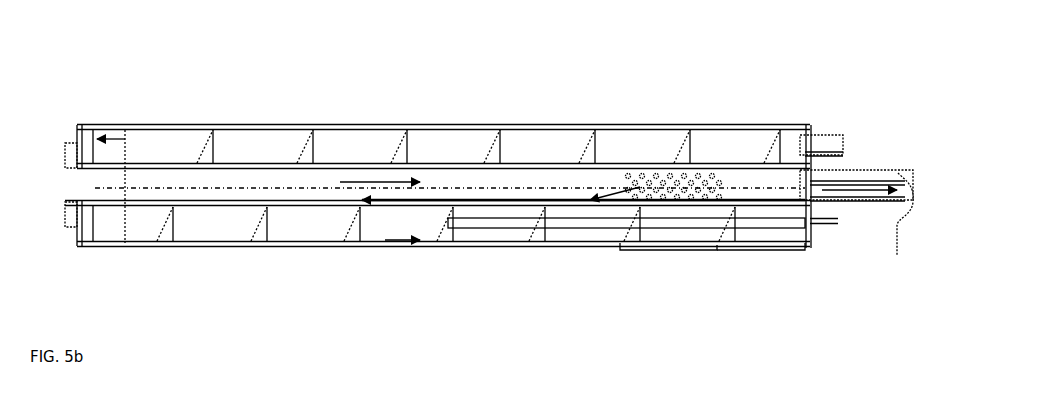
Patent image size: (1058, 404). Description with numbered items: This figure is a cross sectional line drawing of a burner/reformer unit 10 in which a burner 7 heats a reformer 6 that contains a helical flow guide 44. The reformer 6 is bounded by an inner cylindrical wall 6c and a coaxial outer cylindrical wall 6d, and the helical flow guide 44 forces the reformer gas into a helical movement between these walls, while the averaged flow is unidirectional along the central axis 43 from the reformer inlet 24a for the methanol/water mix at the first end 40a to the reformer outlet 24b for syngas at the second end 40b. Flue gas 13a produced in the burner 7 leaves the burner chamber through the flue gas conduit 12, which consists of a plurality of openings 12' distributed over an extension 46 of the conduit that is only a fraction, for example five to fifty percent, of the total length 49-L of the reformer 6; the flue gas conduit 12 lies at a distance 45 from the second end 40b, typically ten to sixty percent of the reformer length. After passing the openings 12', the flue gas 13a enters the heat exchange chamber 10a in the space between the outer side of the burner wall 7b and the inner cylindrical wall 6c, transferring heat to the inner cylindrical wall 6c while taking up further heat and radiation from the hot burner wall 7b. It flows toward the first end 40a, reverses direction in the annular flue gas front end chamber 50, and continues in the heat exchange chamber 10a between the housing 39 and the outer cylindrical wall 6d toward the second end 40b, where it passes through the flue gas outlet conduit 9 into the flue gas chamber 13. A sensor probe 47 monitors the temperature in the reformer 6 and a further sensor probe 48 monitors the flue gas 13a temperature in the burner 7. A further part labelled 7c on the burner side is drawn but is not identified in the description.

The burner/reformer unit 10 is at (125, 73).
The reformer inlet 24a is at (65, 150).
The first end of reformer 40a is at (128, 132).
The reformer 6 is at (247, 135).
The helical flow guide 44 is at (313, 165).
The flue gas 13a is at (373, 183).
The housing 39 is at (447, 123).
The heat exchange chamber 10a is at (480, 125).
The outer cylindrical wall 6d is at (513, 123).
The openings 12' is at (669, 125).
The second end of reformer 40b is at (803, 157).
The reformer outlet 24b is at (825, 135).
The flue gas outlet conduit 9 is at (810, 177).
The flue gas chamber 13 is at (897, 173).
The return channel 7c is at (805, 193).
The flue gas front end chamber 50 is at (88, 240).
The central axis of reformer 43 is at (130, 243).
The burner wall 7b is at (199, 210).
The inner cylindrical wall 6c is at (252, 210).
The burner 7 is at (292, 186).
The sensor probe in reformer 47 is at (473, 197).
The length L of reformer 49-L is at (607, 193).
The extension of flue gas conduit 46 is at (665, 250).
The distance from flue gas conduit to second end of reformer 45 is at (762, 250).
The flue gas conduit 12 is at (747, 263).
The sensor probe in burner 48 is at (897, 222).